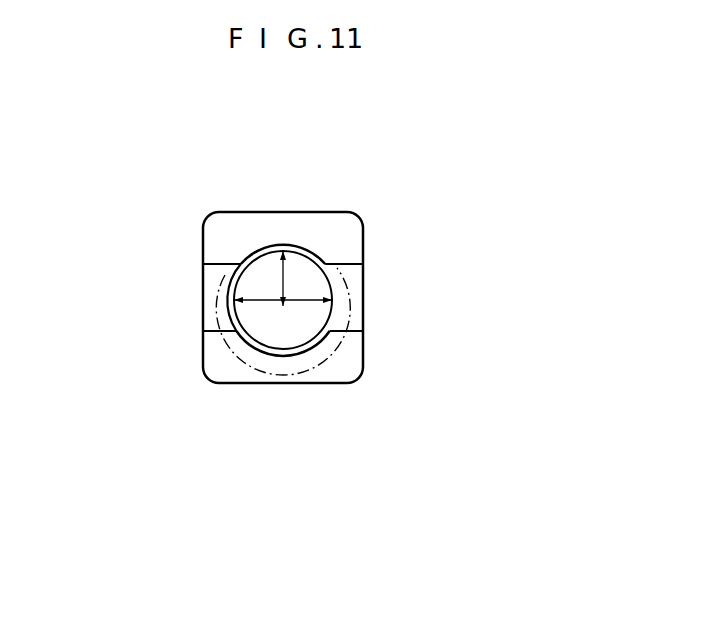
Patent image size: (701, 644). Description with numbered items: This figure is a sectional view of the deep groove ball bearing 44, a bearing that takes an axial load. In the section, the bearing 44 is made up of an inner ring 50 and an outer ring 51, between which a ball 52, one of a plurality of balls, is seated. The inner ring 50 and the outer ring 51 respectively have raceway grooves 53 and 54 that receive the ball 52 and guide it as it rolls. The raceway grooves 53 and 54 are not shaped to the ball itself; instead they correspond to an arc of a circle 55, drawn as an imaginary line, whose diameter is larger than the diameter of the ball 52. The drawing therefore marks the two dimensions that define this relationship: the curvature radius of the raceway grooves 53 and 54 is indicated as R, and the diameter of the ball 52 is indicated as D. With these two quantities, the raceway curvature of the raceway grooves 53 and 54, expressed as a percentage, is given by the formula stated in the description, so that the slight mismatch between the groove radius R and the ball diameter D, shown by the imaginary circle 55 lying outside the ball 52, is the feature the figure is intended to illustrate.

The deep groove ball bearing 44 is at (360, 209).
The inner ring 50 is at (352, 362).
The outer ring 51 is at (303, 230).
The ball 52 is at (318, 318).
The raceway groove 53 is at (314, 350).
The raceway groove 54 is at (265, 245).
The circle 55 is at (230, 348).
The diameter of the balls D is at (263, 298).
The curvature radius of the raceway grooves R is at (292, 283).